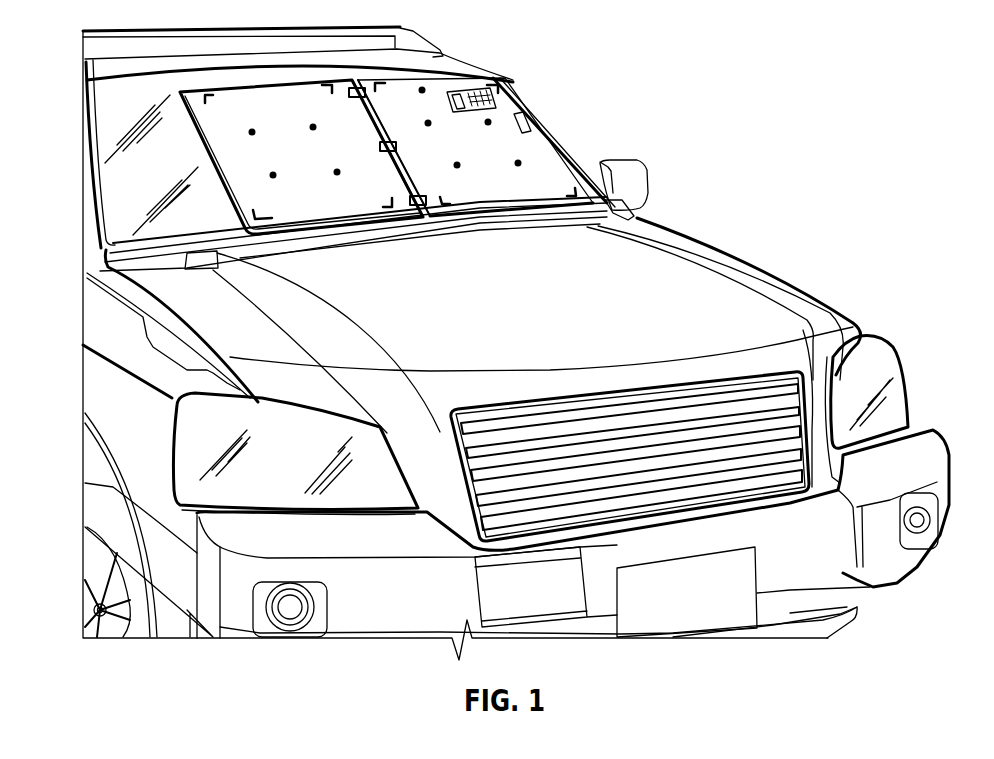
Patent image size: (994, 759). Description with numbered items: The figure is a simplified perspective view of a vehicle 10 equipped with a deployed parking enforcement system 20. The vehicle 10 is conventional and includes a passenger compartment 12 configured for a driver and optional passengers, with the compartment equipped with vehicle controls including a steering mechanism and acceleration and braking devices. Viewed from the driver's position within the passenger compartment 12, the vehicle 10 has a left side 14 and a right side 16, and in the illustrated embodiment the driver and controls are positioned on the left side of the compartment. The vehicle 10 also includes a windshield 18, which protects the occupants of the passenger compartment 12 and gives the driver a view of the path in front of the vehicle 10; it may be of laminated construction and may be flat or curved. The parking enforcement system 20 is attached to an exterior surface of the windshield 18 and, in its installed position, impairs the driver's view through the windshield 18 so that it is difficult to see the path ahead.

The vehicle 10 is at (745, 59).
The passenger compartment 12 is at (100, 168).
The left side 14 is at (742, 255).
The right side 16 is at (103, 297).
The windshield 18 is at (112, 205).
The parking enforcement system 20 is at (533, 158).